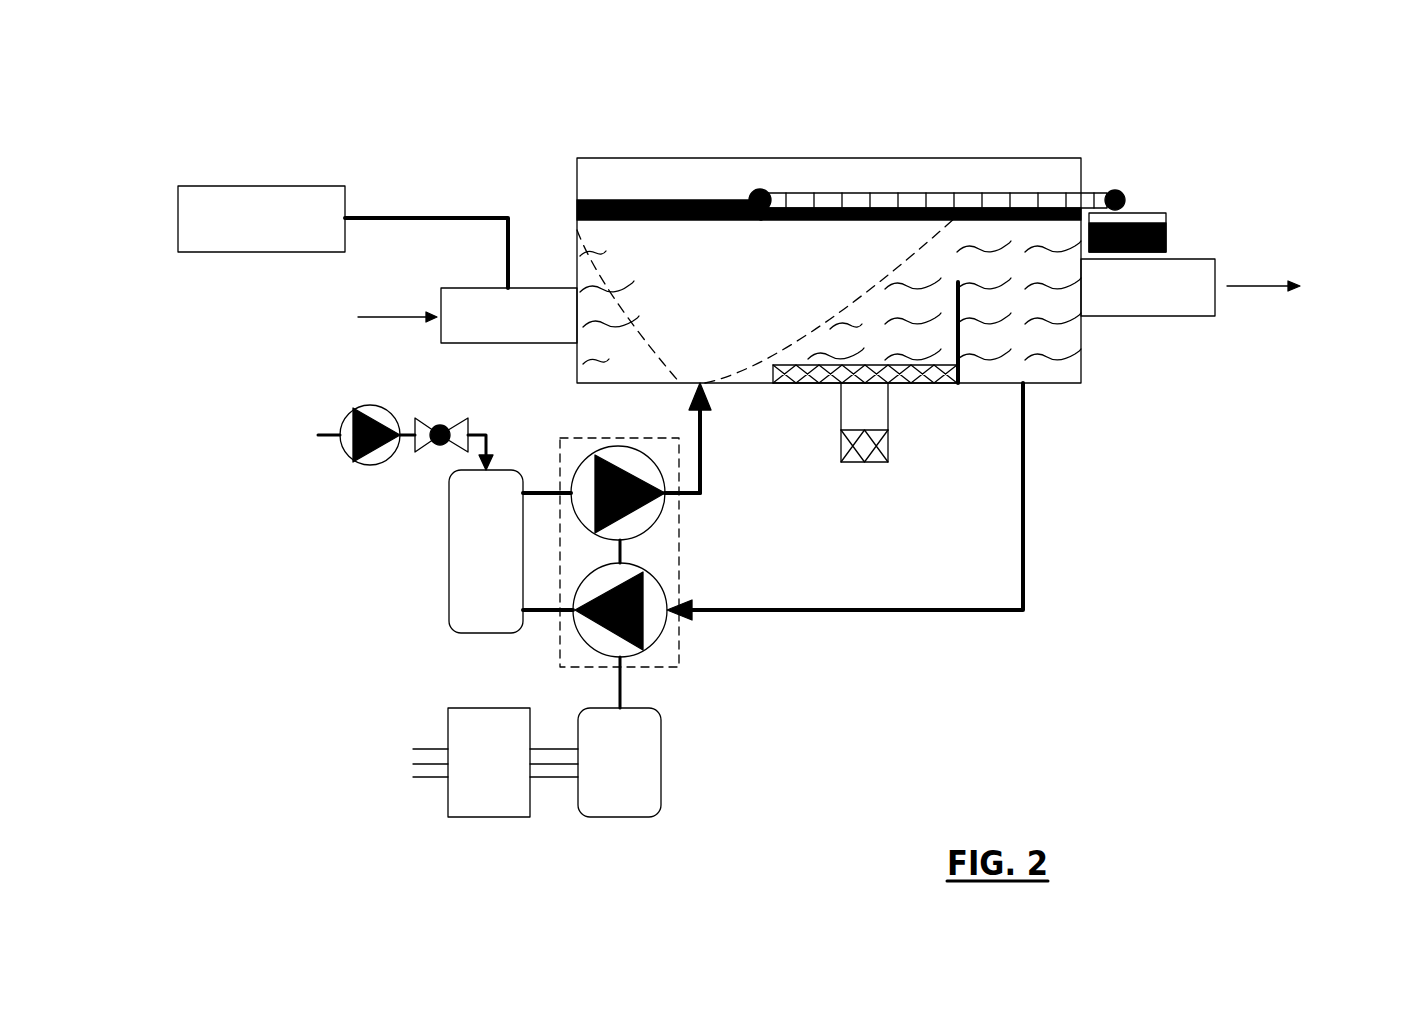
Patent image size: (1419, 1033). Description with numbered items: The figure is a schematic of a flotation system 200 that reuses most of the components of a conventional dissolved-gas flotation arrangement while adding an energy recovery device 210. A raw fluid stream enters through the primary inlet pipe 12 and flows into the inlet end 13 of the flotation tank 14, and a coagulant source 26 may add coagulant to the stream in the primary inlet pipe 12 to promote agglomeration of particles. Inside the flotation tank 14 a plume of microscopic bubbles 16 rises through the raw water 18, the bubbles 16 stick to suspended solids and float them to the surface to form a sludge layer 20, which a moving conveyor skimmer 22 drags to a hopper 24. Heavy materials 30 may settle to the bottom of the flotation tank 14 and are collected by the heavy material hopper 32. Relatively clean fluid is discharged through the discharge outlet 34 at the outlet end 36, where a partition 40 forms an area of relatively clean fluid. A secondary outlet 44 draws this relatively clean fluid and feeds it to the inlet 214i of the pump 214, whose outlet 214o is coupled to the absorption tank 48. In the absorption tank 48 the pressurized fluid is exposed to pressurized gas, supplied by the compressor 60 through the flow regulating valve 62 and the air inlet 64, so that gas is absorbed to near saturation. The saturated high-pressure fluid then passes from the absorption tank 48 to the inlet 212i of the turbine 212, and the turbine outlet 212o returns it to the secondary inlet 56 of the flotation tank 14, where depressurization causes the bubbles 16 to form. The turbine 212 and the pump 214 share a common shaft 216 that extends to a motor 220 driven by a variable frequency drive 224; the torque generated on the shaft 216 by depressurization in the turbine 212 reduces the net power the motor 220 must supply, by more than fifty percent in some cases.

The system 200 is at (1100, 92).
The primary inlet pipe 12 is at (457, 293).
The inlet end 13 is at (633, 374).
The flotation tank 14 is at (577, 229).
The bubbles 16 is at (753, 307).
The raw water 18 is at (918, 350).
The sludge layer 20 is at (668, 200).
The moving conveyor skimmer 22 is at (942, 193).
The hopper 24 is at (1166, 235).
The coagulant source 26 is at (310, 186).
The heavy materials 30 is at (923, 381).
The heavy material hopper 32 is at (840, 420).
The discharge outlet 34 is at (1190, 306).
The outlet end 36 is at (1030, 352).
The partition 40 is at (961, 357).
The secondary outlet 44 is at (1025, 535).
The absorption tank 48 is at (449, 591).
The secondary inlet 56 is at (703, 443).
The compressor 60 is at (362, 408).
The flow regulating valve 62 is at (451, 420).
The air inlet 64 is at (486, 434).
The energy recovery device 210 is at (679, 667).
The turbine 212 is at (665, 508).
The turbine inlet 212i is at (548, 490).
The turbine outlet 212o is at (702, 487).
The pump 214 is at (665, 625).
The pump inlet 214i is at (674, 607).
The pump outlet 214o is at (545, 613).
The common shaft 216 is at (625, 550).
The motor 220 is at (618, 820).
The variable frequency drive 224 is at (488, 820).